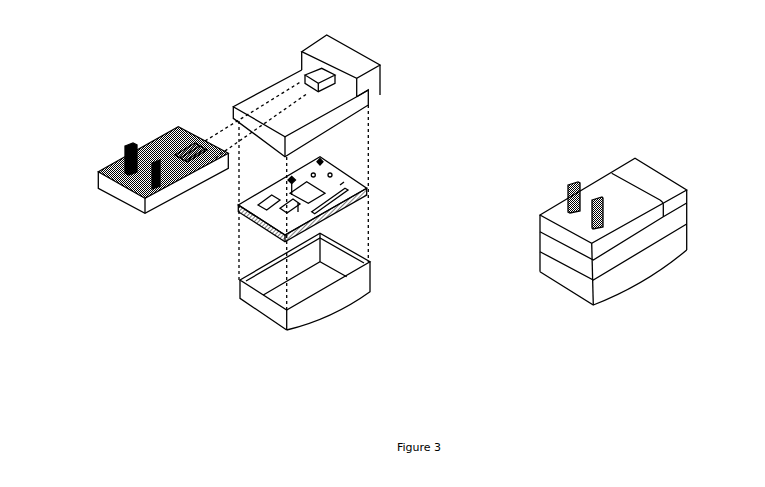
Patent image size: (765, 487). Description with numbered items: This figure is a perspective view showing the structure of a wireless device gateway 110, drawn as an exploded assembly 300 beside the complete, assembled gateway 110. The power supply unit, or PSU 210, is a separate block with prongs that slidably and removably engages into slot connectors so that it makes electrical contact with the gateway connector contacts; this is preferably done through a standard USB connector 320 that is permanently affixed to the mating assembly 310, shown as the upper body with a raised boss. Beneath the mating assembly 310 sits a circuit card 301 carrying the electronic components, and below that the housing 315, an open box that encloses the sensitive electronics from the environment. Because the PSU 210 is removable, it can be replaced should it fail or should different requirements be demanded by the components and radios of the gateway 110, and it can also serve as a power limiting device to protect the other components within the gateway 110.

The device gateway 110 is at (613, 240).
The PSU 210 is at (98, 171).
The assembly 300 is at (475, 447).
The circuit board 301 is at (368, 188).
The mating assembly 310 is at (367, 93).
The housing 315 is at (372, 273).
The USB connector 320 is at (303, 78).